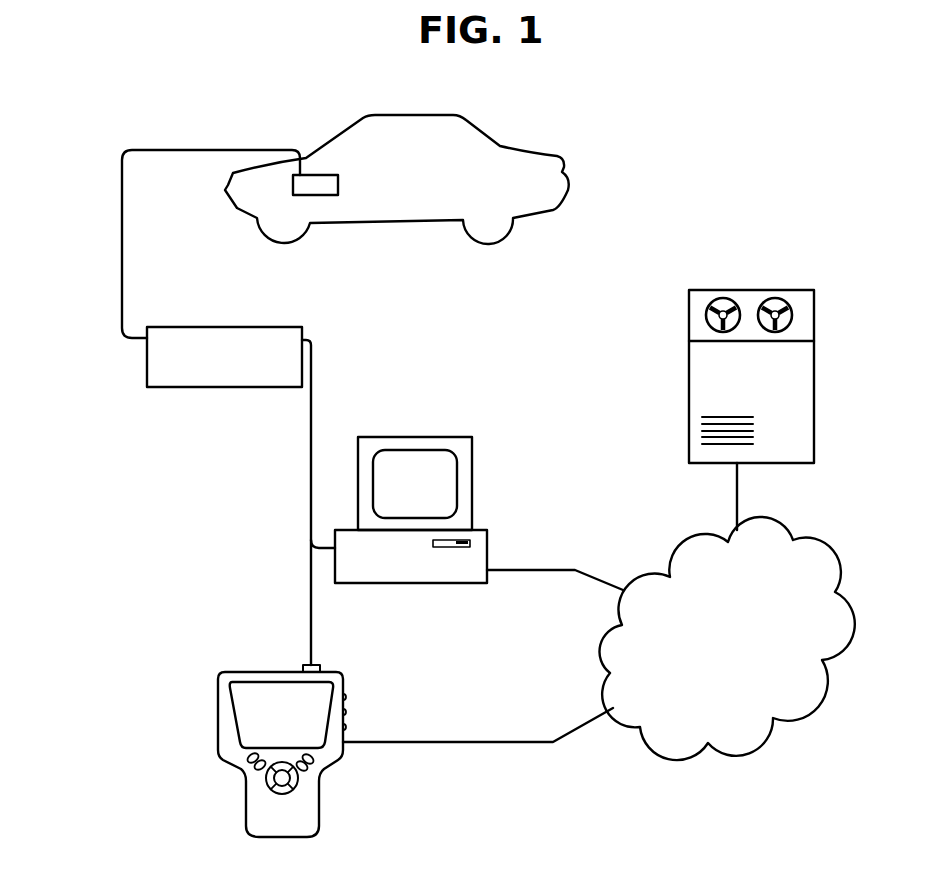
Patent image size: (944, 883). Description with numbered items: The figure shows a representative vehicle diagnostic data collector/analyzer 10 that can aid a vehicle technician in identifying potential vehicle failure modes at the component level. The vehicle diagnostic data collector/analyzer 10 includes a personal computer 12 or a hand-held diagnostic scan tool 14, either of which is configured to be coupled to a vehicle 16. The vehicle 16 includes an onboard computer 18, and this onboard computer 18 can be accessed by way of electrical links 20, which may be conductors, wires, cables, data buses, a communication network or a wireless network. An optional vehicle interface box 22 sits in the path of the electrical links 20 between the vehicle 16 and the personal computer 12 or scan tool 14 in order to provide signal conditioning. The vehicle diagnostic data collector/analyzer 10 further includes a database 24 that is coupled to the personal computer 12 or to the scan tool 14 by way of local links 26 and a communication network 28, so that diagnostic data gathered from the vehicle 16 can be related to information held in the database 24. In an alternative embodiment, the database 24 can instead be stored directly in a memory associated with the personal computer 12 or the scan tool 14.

The vehicle diagnostic data collector/analyzer 10 is at (684, 204).
The personal computer 12 is at (488, 480).
The hand-held diagnostic scan tool 14 is at (218, 699).
The vehicle 16 is at (231, 201).
The onboard computer 18 is at (332, 172).
The electrical links 20 is at (84, 178).
The vehicle interface box 22 is at (224, 357).
The database 24 is at (689, 371).
The local links 26 is at (737, 482).
The communication network 28 is at (726, 638).